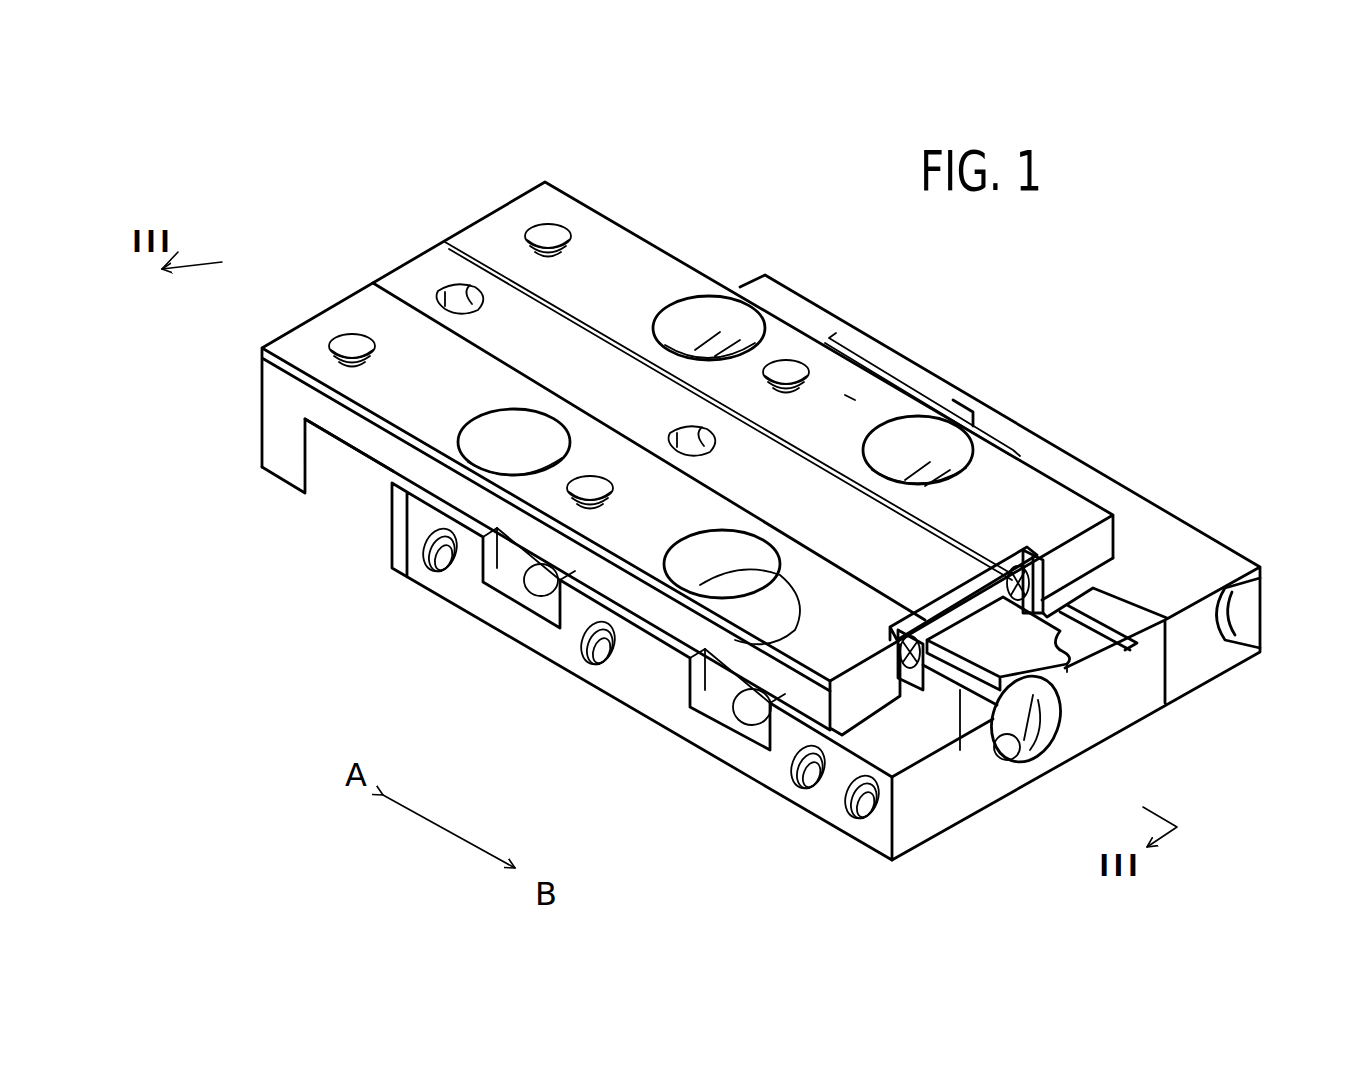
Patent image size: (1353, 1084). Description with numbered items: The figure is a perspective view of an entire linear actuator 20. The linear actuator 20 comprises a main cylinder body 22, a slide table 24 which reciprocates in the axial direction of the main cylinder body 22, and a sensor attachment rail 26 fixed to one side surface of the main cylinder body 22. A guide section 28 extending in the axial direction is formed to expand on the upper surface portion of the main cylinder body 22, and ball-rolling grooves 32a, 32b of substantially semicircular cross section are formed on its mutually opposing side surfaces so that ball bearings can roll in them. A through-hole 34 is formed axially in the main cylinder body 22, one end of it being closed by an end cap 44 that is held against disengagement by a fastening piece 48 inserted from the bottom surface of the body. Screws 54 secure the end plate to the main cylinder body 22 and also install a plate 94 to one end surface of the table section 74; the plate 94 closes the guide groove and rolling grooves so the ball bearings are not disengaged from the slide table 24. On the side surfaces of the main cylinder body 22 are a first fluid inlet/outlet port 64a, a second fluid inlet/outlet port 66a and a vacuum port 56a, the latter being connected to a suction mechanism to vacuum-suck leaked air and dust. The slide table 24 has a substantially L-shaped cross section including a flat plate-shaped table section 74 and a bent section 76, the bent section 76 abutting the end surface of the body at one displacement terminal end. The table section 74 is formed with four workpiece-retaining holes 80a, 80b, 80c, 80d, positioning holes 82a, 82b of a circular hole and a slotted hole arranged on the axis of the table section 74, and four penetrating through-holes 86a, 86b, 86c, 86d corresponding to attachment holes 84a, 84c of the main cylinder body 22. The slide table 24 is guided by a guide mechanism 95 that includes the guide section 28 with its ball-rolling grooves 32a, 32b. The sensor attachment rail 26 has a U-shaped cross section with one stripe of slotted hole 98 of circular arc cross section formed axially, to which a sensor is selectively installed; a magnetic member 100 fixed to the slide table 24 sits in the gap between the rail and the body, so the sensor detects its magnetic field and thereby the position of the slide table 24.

The linear actuator 20 is at (1155, 355).
The main cylinder body 22 is at (607, 700).
The slide table 24 is at (600, 206).
The sensor attachment rail 26 is at (1116, 470).
The guide section 28 is at (1000, 650).
The ball-rolling groove 32a is at (962, 685).
The ball-rolling groove 32b is at (1075, 660).
The through-hole 34 is at (1015, 715).
The end cap 44 is at (1053, 702).
The fastening piece 48 is at (1023, 735).
The screws 54 is at (898, 682).
The vacuum port 56a is at (435, 558).
The first fluid inlet/outlet port 64a is at (797, 770).
The second fluid inlet/outlet port 66a is at (596, 652).
The table section 74 is at (850, 405).
The bent section 76 is at (293, 448).
The workpiece-retaining hole 80a is at (590, 487).
The workpiece-retaining hole 80b is at (790, 367).
The workpiece-retaining hole 80c is at (345, 345).
The workpiece-retaining hole 80d is at (555, 233).
The positioning hole 82a is at (470, 295).
The positioning hole 82b is at (700, 433).
The attachment hole 84a is at (752, 708).
The attachment hole 84c is at (535, 590).
The penetrating through-hole 86a is at (693, 667).
The penetrating through-hole 86b is at (925, 442).
The penetrating through-hole 86c is at (505, 442).
The penetrating through-hole 86d is at (700, 317).
The plate 94 is at (945, 612).
The guide mechanism 95 is at (1053, 620).
The slotted hole 98 is at (1235, 625).
The magnetic member 100 is at (905, 372).